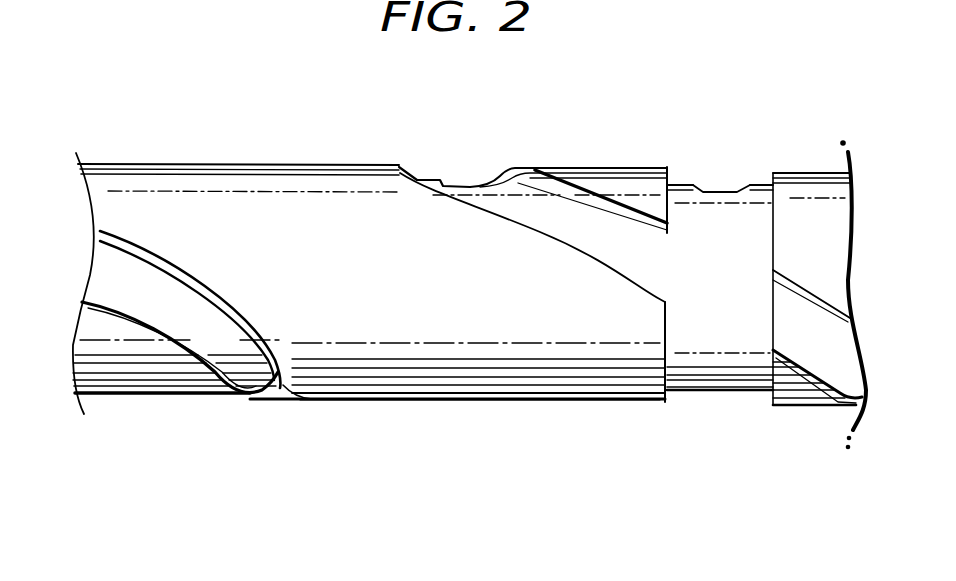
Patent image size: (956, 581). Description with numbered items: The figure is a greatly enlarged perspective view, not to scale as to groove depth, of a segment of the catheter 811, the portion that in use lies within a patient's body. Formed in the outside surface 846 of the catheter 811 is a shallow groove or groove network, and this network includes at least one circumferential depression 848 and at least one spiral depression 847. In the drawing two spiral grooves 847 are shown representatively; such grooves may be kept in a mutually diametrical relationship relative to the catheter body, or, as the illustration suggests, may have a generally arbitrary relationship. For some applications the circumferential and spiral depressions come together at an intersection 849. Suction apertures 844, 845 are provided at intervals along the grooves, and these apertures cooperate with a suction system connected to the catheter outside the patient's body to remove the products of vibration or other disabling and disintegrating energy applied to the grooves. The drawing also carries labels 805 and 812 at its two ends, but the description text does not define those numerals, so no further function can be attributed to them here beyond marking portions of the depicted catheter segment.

The shank / flange portion 805 is at (848, 152).
The catheter 811 is at (417, 414).
The cylindrical end portion 812 is at (80, 154).
The suction aperture 844 is at (470, 189).
The suction aperture 845 is at (720, 191).
The outside surface 846 is at (457, 298).
The spiral depression 847 is at (176, 300).
The circumferential depression 848 is at (698, 212).
The intersection 849 is at (719, 269).